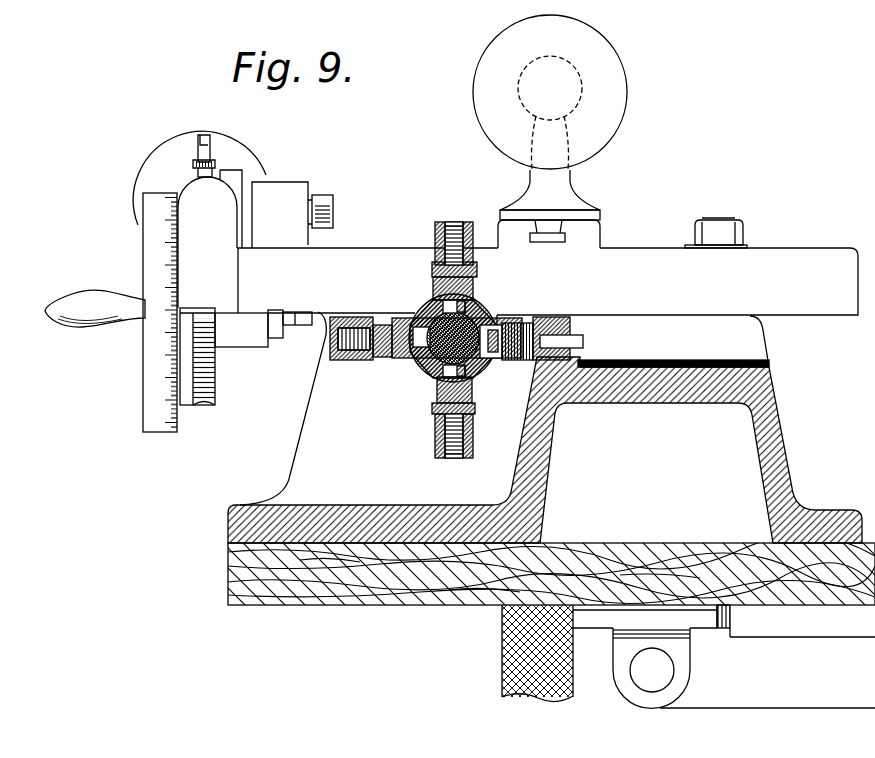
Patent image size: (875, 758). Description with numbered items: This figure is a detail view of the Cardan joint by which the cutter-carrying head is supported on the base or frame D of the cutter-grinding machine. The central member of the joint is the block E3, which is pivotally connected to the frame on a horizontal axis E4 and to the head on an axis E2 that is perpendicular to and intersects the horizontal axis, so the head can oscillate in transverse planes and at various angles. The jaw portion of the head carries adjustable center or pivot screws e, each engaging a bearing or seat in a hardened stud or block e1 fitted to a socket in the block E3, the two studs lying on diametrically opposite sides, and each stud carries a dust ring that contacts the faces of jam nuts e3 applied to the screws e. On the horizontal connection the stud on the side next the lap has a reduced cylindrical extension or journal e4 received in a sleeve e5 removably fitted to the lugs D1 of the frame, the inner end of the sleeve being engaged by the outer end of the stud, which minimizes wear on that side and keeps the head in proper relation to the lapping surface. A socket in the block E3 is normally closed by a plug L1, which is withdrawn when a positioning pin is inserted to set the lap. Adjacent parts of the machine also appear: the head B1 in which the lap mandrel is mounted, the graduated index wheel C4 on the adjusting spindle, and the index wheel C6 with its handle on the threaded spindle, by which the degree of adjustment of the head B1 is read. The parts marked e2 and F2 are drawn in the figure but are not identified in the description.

The head B1 is at (553, 186).
The index wheel C4 is at (248, 160).
The index wheel C6 is at (155, 377).
The base or frame D is at (646, 402).
The lugs D1 is at (553, 363).
The axis E2 is at (444, 232).
The block E3 is at (422, 315).
The horizontal axis E4 is at (613, 332).
The lower screw plug F2 is at (455, 405).
The plug L1 is at (505, 318).
The center or pivot screws e is at (452, 250).
The hardened stud or block e1 is at (468, 315).
The gland e2 is at (477, 279).
The jam nuts e3 is at (492, 411).
The reduced cylindrical extension or journal e4 is at (570, 340).
The sleeve e5 is at (553, 327).